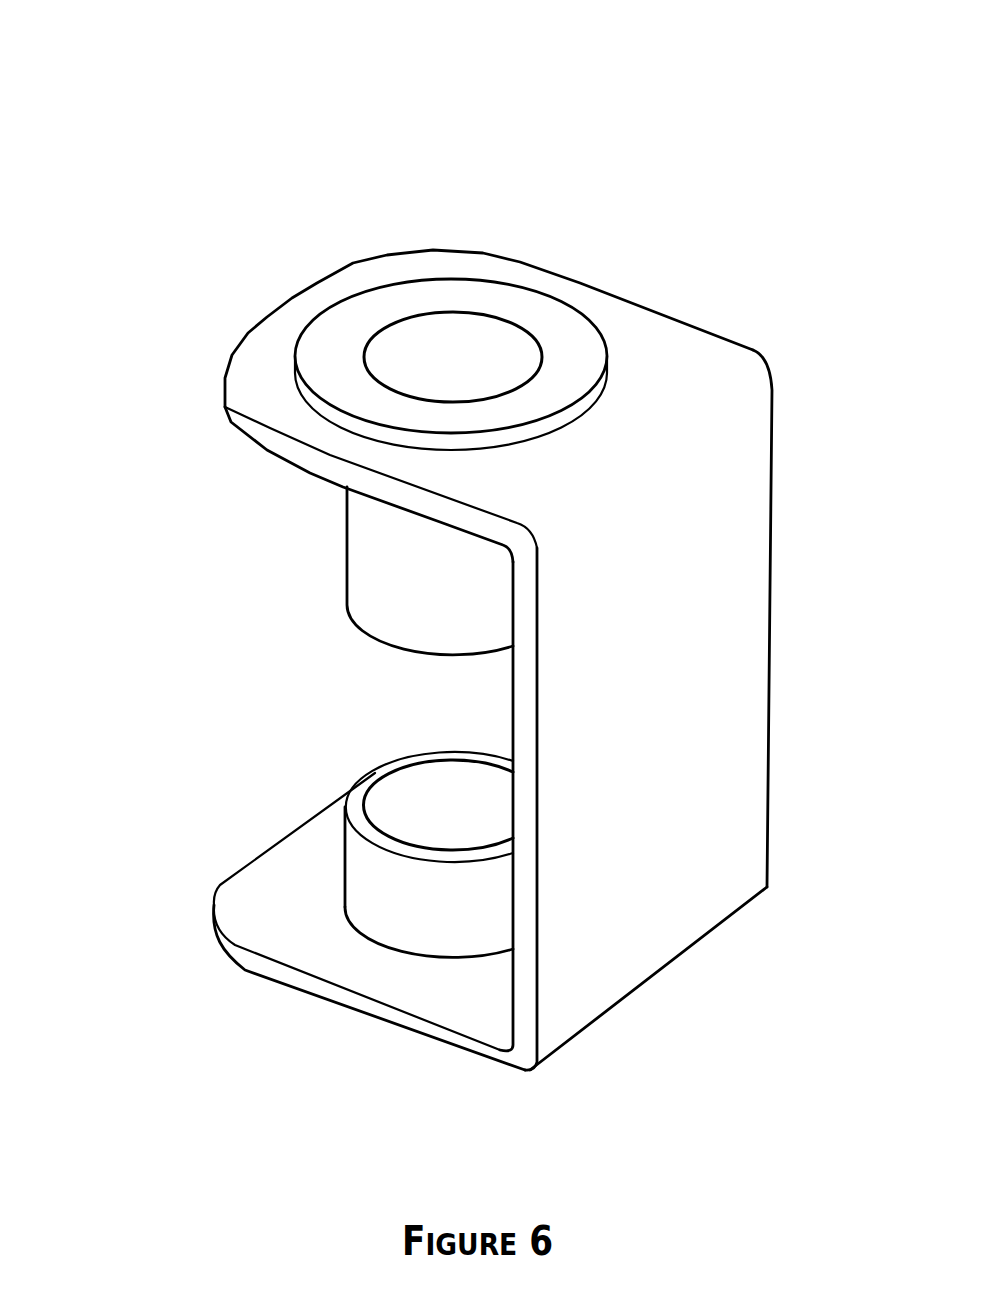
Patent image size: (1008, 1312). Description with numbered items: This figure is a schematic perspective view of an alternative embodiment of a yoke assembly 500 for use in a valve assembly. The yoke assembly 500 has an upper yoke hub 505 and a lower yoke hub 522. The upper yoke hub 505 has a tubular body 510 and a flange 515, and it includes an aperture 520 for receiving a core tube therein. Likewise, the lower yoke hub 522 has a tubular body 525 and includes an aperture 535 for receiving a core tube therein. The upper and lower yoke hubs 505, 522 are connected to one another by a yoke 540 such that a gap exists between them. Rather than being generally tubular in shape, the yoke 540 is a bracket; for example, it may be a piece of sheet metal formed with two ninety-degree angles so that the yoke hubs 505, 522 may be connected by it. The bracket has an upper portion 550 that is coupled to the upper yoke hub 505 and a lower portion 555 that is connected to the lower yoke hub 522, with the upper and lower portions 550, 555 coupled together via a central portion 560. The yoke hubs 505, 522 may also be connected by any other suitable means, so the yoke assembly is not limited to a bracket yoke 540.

The yoke assembly 500 is at (72, 60).
The upper yoke hub 505 is at (497, 293).
The tubular body 510 is at (343, 593).
The flange 515 is at (560, 307).
The aperture 520 is at (415, 340).
The lower yoke hub 522 is at (407, 913).
The tubular body 525 is at (357, 862).
The aperture 535 is at (413, 787).
The yoke 540 is at (777, 393).
The upper portion 550 is at (643, 333).
The lower portion 555 is at (420, 1028).
The central portion 560 is at (727, 717).